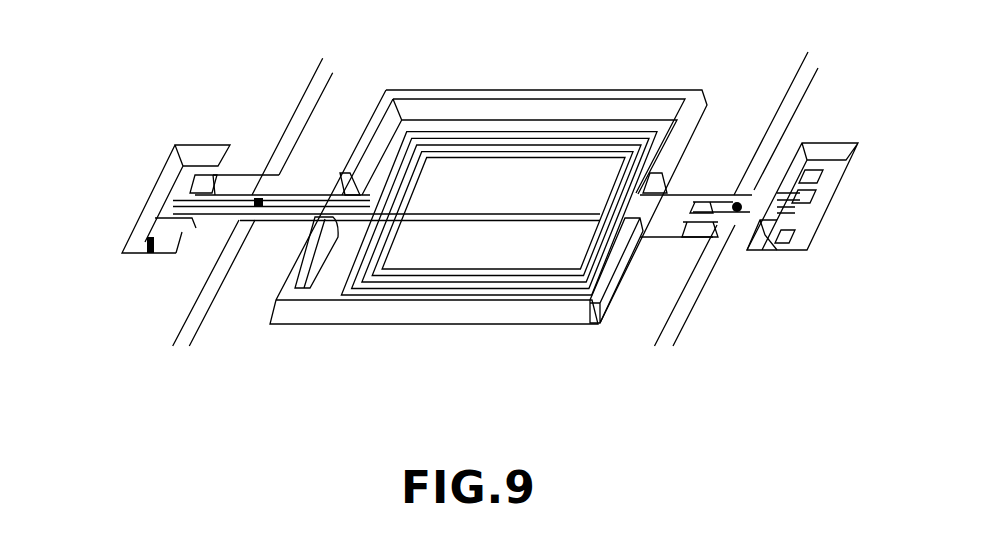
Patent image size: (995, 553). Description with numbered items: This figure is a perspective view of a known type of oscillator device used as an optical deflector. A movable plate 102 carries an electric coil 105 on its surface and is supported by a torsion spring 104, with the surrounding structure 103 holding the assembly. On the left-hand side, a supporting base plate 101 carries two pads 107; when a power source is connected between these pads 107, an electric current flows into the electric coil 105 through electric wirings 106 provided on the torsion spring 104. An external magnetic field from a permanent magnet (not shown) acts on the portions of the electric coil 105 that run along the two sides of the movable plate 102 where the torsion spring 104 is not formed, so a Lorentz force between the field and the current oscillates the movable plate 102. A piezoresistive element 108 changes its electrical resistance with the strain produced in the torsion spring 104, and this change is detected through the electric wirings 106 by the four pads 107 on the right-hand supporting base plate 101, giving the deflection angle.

The supporting base plate 101 is at (138, 284).
The movable plate 102 is at (528, 165).
The frame 103 is at (397, 315).
The torsion spring 104 is at (273, 230).
The electric coil 105 is at (447, 144).
The electric wirings 106 is at (703, 237).
The pads 107 is at (188, 192).
The piezoresistive element 108 is at (697, 188).